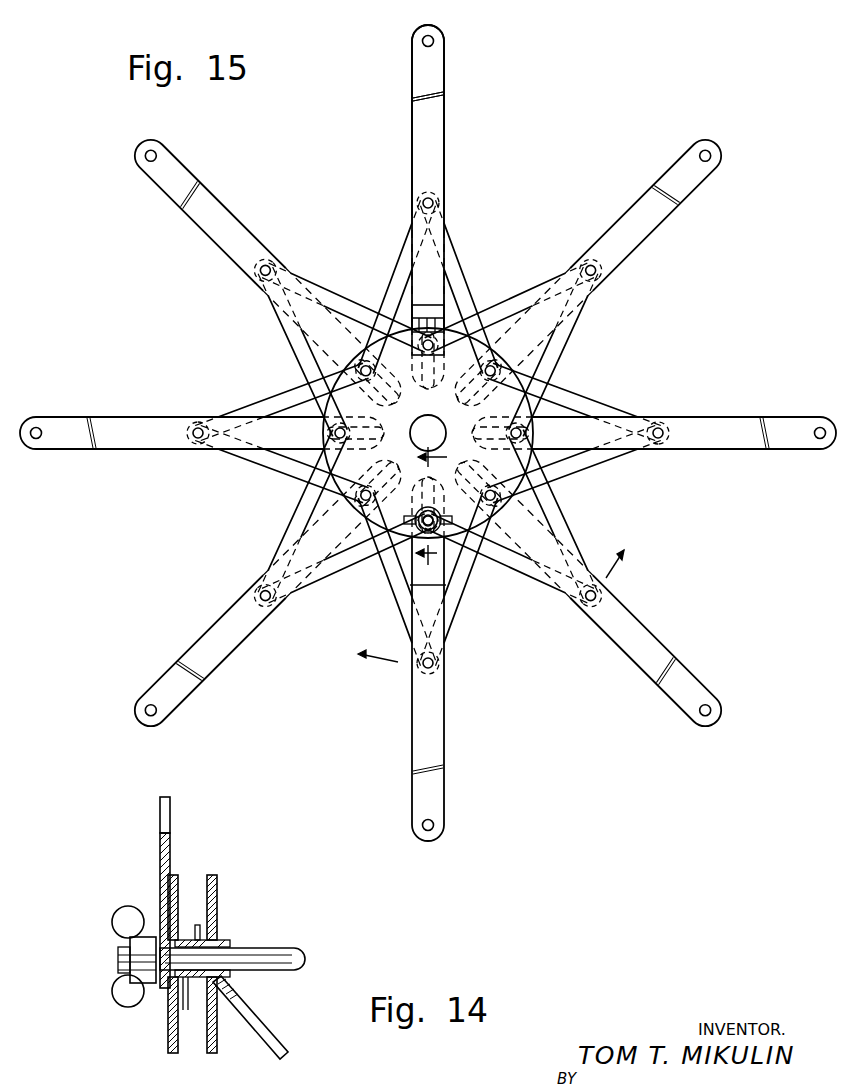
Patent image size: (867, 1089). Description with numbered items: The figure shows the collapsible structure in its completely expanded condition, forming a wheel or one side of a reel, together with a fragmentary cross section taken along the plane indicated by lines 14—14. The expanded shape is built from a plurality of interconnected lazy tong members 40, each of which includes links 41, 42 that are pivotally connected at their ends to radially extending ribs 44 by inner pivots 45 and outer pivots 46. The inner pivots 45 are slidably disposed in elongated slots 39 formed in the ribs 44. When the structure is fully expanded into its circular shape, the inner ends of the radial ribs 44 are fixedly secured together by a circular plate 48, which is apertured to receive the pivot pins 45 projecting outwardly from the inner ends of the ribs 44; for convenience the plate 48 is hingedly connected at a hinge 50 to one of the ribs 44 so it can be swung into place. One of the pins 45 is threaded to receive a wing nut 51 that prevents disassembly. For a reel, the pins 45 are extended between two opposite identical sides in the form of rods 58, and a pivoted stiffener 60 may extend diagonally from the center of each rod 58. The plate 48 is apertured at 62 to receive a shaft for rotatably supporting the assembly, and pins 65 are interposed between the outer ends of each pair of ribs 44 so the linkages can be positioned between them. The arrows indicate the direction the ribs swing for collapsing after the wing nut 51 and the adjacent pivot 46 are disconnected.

In FIG. 15, the section line 14 is at (442, 513).
In FIG. 14, the elongated slots 39 is at (218, 915).
In FIG. 15, the lazy tong members 40 is at (361, 270).
In FIG. 15, the link 41 is at (330, 582).
In FIG. 15, the link 42 is at (393, 604).
In FIG. 15, the radially extending ribs 44 is at (641, 633).
In FIG. 14, the radially extending ribs 44 is at (211, 875).
In FIG. 15, the inner pivots 45 is at (537, 420).
In FIG. 15, the outer pivots 46 is at (437, 204).
In FIG. 15, the circular plate 48 is at (514, 414).
In FIG. 14, the circular plate 48 is at (160, 858).
In FIG. 15, the hinge connection 50 is at (446, 318).
In FIG. 15, the wing nut 51 is at (412, 530).
In FIG. 14, the wing nut 51 is at (125, 919).
In FIG. 14, the rods 58 is at (268, 948).
In FIG. 14, the pivoted stiffener 60 is at (268, 1024).
In FIG. 15, the aperture 62 is at (413, 428).
In FIG. 14, the aperture 62 is at (160, 810).
In FIG. 15, the pins 65 is at (441, 39).